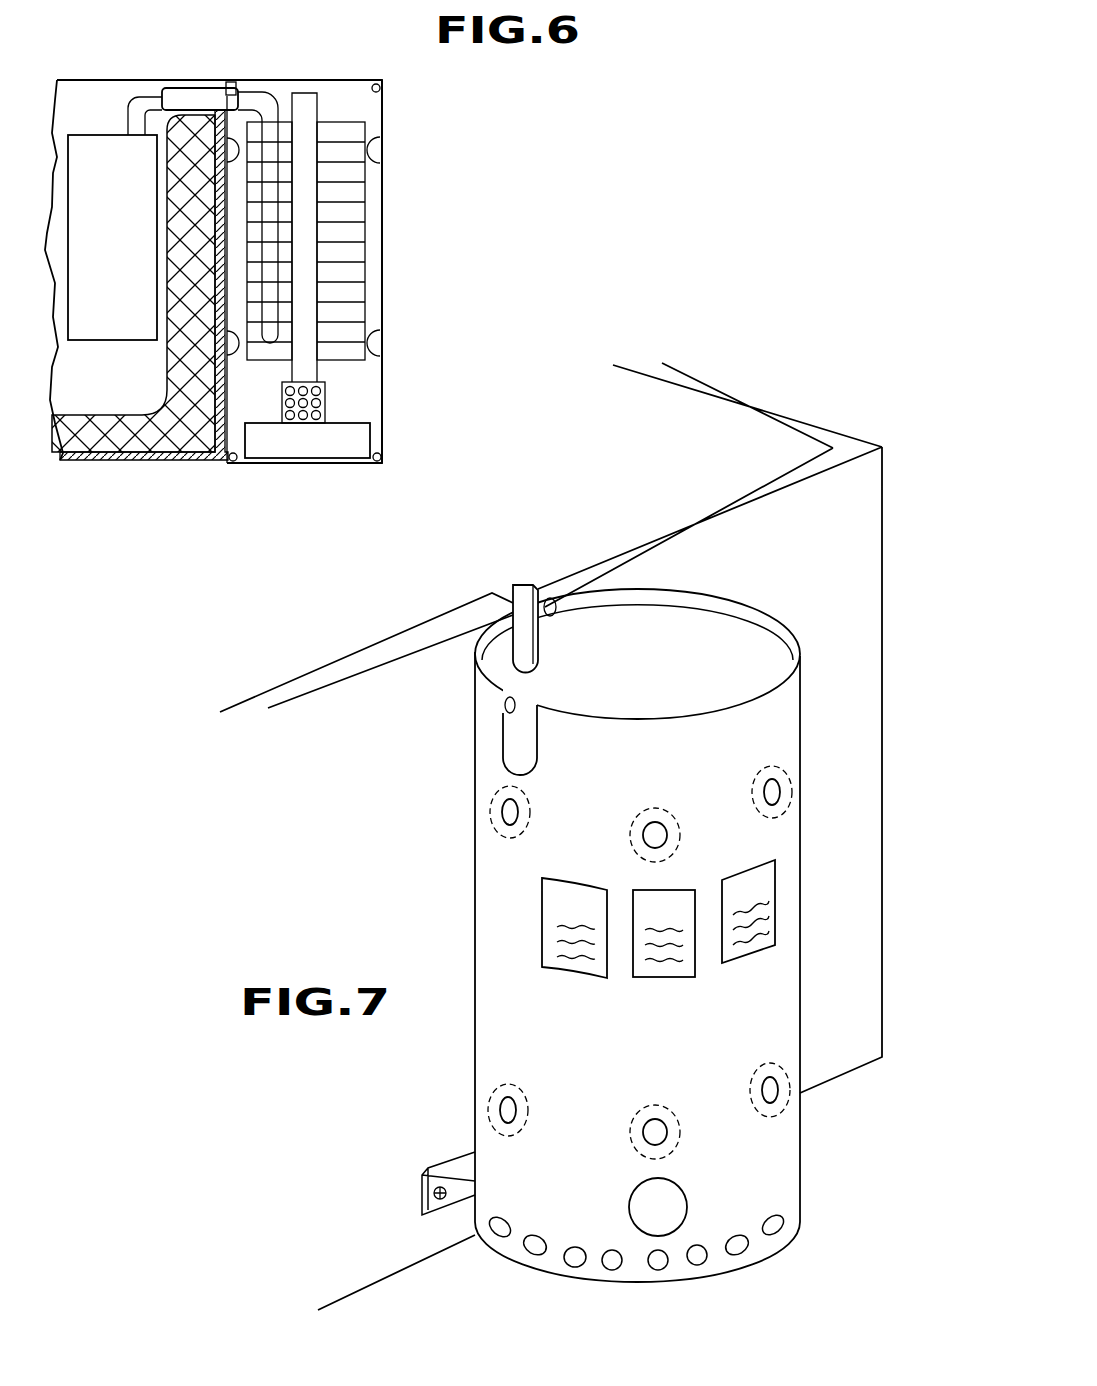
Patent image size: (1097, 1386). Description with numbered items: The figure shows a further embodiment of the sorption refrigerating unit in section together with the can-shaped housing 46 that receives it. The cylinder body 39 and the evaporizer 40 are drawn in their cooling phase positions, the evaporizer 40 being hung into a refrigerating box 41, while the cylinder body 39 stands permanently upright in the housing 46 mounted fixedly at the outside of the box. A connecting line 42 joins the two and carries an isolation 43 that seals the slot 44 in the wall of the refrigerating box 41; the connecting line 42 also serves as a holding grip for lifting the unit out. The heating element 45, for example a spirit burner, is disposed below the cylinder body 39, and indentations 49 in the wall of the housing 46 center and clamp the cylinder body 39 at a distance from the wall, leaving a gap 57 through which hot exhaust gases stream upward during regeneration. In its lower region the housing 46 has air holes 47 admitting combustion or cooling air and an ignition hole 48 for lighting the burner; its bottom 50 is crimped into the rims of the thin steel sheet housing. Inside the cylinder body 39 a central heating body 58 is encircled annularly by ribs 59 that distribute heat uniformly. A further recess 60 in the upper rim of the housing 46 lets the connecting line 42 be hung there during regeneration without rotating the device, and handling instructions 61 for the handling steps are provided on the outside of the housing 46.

In FIG. 6, the cylinder body 39 is at (355, 241).
In FIG. 6, the evaporizer 40 is at (112, 237).
In FIG. 6, the refrigerating box 41 is at (103, 433).
In FIG. 7, the refrigerating box 41 is at (551, 836).
In FIG. 6, the connecting line 42 is at (137, 98).
In FIG. 6, the isolation 43 is at (192, 88).
In FIG. 6, the slot 44 is at (236, 70).
In FIG. 7, the slot 44 is at (527, 598).
In FIG. 6, the heating element 45 is at (358, 443).
In FIG. 6, the housing 46 is at (383, 245).
In FIG. 7, the housing 46 is at (773, 1002).
In FIG. 7, the air hole 47 is at (740, 1250).
In FIG. 7, the ignition hole 48 is at (670, 1193).
In FIG. 6, the indentation 49 is at (370, 337).
In FIG. 7, the indentation 49 is at (772, 1092).
In FIG. 6, the bottom 50 is at (288, 463).
In FIG. 6, the gap 57 is at (375, 300).
In FIG. 6, the heating body 58 is at (307, 130).
In FIG. 6, the ribs 59 is at (345, 160).
In FIG. 7, the recess 60 is at (500, 757).
In FIG. 7, the handling instructions 61 is at (592, 978).